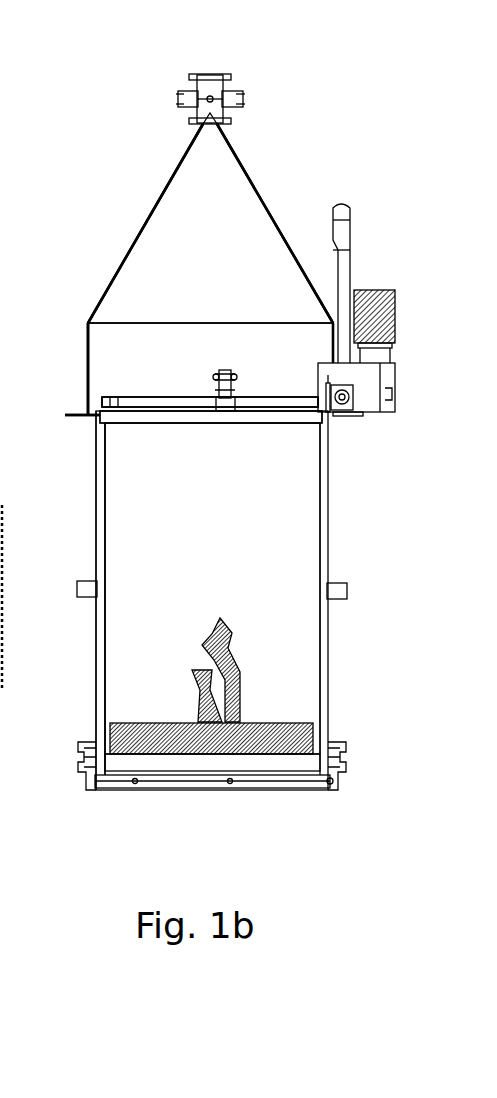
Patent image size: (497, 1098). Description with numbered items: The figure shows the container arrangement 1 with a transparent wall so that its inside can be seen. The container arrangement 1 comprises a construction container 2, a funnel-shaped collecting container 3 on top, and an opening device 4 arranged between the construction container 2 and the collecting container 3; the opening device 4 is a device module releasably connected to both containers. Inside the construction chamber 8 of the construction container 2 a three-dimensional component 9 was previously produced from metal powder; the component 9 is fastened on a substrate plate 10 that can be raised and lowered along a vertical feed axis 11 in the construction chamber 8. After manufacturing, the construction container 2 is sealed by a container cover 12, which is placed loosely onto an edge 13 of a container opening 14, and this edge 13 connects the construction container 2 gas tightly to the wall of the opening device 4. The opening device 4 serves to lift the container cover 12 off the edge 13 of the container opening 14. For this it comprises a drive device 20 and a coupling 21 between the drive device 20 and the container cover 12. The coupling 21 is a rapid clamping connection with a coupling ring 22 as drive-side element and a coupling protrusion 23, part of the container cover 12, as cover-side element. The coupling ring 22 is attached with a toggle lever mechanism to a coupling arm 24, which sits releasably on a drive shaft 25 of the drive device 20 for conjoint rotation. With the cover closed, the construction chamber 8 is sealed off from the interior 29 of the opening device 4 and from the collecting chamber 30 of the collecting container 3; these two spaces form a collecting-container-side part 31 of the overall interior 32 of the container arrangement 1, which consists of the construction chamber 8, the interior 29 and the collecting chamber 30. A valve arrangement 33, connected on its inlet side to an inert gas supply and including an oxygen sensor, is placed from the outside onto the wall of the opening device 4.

The container arrangement 1 is at (285, 122).
The construction container 2 is at (338, 628).
The funnel-shaped collecting container 3 is at (146, 206).
The opening device 4 is at (82, 370).
The construction chamber 8 is at (217, 556).
The three-dimensional component 9 is at (229, 655).
The substrate plate 10 is at (257, 722).
The vertical feed axis 11 is at (12, 606).
The container cover 12 is at (203, 424).
The edge 13 is at (95, 419).
The container opening 14 is at (125, 434).
The drive device 20 is at (360, 420).
The coupling 21 is at (246, 393).
The coupling ring 22 is at (236, 385).
The coupling protrusion 23 is at (226, 410).
The coupling arm 24 is at (160, 398).
The drive shaft 25 is at (346, 394).
The interior 29 is at (222, 358).
The collecting chamber 30 is at (218, 241).
The collecting-container-side part 31 is at (160, 299).
The interior 32 is at (253, 252).
The valve arrangement 33 is at (373, 285).